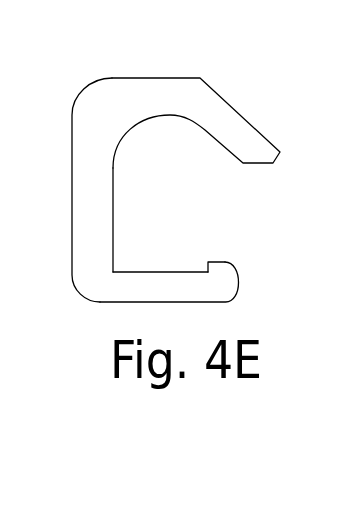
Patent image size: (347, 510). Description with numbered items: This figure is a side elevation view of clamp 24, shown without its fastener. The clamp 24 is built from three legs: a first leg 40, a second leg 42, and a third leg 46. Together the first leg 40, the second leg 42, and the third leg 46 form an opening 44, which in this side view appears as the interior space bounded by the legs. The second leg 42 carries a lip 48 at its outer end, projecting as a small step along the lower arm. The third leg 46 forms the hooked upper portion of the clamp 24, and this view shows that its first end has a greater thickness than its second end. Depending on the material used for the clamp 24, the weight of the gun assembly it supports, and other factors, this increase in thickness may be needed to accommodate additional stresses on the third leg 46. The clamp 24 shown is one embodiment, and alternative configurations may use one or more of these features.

The clamp 24 is at (170, 205).
The first leg 40 is at (168, 170).
The second leg 42 is at (177, 287).
The opening 44 is at (258, 219).
The third leg 46 is at (172, 100).
The lip 48 is at (227, 262).